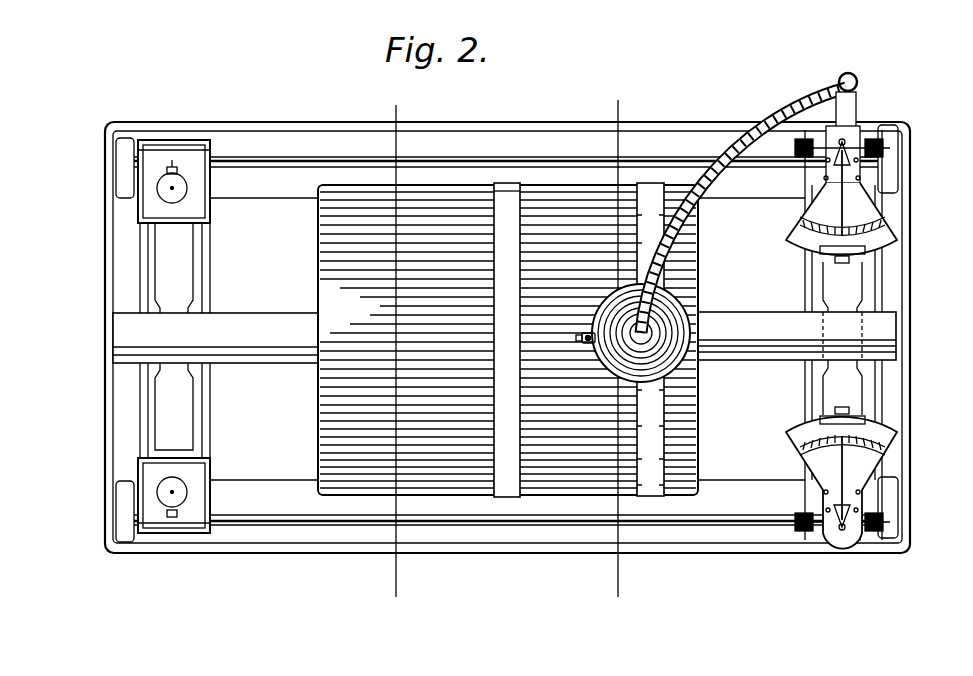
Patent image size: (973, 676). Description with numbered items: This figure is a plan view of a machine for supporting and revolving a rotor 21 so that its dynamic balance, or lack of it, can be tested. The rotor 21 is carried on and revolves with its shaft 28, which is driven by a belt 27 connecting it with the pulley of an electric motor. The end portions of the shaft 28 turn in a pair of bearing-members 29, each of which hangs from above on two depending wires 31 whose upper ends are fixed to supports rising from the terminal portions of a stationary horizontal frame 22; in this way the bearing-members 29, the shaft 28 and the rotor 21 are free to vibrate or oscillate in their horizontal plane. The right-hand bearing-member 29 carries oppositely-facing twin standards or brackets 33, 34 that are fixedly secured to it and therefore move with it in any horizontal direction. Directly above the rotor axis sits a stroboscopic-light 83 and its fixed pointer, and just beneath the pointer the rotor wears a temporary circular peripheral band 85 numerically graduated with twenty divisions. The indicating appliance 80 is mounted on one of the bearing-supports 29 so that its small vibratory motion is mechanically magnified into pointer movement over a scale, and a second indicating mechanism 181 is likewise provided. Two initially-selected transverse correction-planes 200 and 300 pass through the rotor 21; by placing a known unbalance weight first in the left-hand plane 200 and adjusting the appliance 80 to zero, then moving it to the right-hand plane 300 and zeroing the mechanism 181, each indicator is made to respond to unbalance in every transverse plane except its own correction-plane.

The rotor 21 is at (340, 292).
The frame 22 is at (262, 551).
The belt 27 is at (513, 497).
The shaft 28 is at (135, 335).
The bearing-members 29 is at (160, 302).
The depending wires 31 is at (172, 188).
The standard or bracket 33 is at (872, 178).
The standard or bracket 34 is at (872, 495).
The indicating appliance assembly 80 is at (822, 208).
The stroboscopic-light 83 is at (660, 325).
The graduated band 85 is at (642, 497).
The second indicating mechanism 181 is at (820, 466).
The left-hand correction-plane 200 is at (389, 365).
The right-hand correction-plane 300 is at (619, 362).